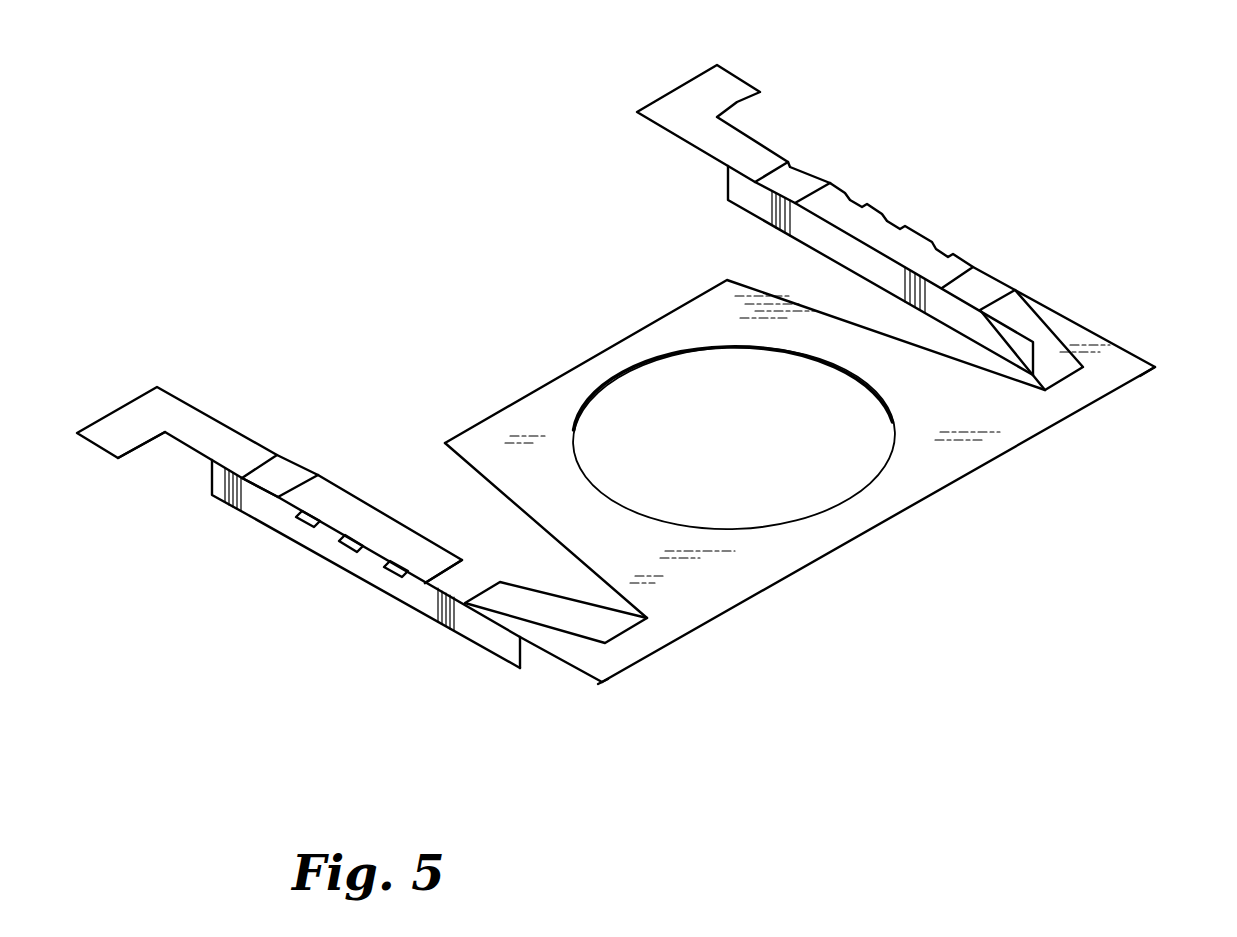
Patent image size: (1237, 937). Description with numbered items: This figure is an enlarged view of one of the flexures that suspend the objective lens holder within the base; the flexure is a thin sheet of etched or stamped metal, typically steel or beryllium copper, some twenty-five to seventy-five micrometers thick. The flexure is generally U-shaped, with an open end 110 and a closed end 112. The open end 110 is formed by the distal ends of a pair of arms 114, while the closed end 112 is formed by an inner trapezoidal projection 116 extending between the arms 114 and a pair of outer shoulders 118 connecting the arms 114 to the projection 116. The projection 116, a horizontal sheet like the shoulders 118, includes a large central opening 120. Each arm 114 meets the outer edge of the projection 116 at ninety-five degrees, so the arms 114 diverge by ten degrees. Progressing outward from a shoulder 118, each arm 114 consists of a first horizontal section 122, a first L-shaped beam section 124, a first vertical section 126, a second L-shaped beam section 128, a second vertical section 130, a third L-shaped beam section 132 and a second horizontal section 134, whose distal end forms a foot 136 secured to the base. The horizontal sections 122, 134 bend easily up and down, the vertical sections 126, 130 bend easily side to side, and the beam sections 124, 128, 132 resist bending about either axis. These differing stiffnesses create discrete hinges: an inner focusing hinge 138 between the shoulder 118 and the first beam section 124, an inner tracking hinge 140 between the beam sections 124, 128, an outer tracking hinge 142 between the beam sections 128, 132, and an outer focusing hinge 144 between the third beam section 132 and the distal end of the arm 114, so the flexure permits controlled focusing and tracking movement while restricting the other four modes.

The open end 110 is at (626, 394).
The closed end 112 is at (835, 526).
The arms 114 is at (581, 366).
The trapezoidal projection 116 is at (510, 405).
The outer shoulders 118 is at (1155, 368).
The central opening 120 is at (818, 482).
The first horizontal section 122 is at (558, 656).
The first L-shaped beam section 124 is at (493, 636).
The first vertical section 126 is at (445, 628).
The second L-shaped beam section 128 is at (330, 496).
The second vertical section 130 is at (246, 488).
The third L-shaped beam section 132 is at (222, 493).
The second horizontal section 134 is at (218, 422).
The foot 136 is at (683, 84).
The inner focusing hinge 138 is at (567, 617).
The inner tracking hinge 140 is at (448, 592).
The outer tracking hinge 142 is at (246, 490).
The outer focusing hinge 144 is at (165, 437).